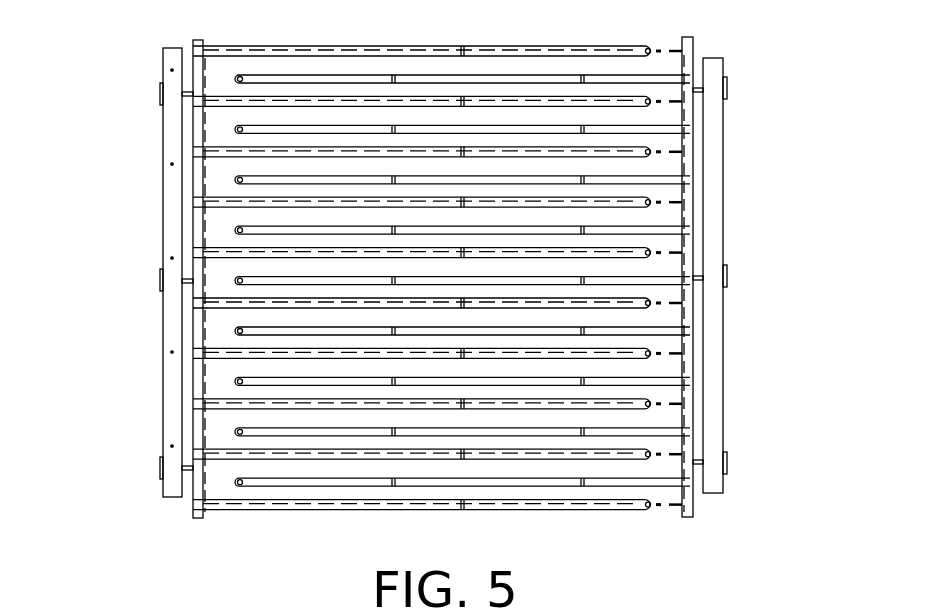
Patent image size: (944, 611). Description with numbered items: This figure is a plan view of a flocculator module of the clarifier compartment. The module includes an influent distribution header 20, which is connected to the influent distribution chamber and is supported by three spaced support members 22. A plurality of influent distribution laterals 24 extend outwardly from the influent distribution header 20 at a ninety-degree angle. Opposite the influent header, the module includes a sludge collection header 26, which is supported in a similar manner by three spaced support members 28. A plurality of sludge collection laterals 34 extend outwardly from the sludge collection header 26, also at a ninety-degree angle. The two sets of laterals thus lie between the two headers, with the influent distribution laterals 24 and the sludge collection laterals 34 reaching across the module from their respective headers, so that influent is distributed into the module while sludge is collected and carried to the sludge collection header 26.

The influent distribution header 20 is at (713, 190).
The support members 22 is at (727, 88).
The influent distribution laterals 24 is at (672, 333).
The sludge collection header 26 is at (166, 201).
The support members 28 is at (160, 94).
The sludge collection laterals 34 is at (215, 363).